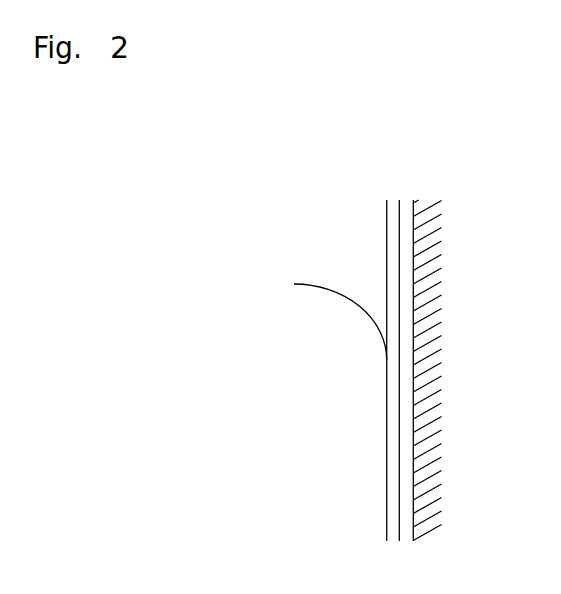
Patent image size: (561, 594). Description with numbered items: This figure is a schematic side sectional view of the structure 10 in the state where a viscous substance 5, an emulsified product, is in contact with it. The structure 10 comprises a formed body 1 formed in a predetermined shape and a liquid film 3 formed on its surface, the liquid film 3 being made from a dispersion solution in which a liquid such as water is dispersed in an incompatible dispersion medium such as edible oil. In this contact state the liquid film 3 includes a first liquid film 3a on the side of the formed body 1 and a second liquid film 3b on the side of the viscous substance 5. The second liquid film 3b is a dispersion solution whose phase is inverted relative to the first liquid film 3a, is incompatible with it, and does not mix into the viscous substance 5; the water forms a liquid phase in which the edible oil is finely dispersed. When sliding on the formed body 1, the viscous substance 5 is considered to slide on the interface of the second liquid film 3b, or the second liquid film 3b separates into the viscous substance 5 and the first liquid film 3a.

The structure 10 is at (425, 188).
The formed body 1 is at (439, 370).
The liquid film 3 is at (335, 439).
The first liquid film 3a is at (405, 446).
The second liquid film 3b is at (392, 488).
The viscous substance 5 is at (338, 342).